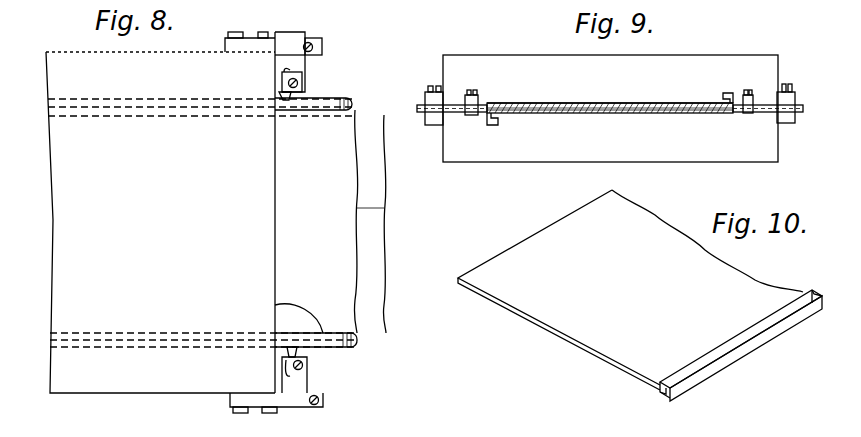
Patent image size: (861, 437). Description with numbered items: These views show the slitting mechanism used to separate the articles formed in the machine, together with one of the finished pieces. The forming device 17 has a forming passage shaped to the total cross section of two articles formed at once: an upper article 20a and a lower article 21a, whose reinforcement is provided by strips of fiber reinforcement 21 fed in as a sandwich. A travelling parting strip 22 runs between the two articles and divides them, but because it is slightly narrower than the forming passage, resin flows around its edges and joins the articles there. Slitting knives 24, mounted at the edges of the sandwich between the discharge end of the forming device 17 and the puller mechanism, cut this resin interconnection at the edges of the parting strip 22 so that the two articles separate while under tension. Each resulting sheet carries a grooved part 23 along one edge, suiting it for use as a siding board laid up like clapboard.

In FIG. 8, the forming device 17 is at (53, 241).
In FIG. 8, the upper article 20a is at (384, 208).
In FIG. 9, the upper article 20a is at (520, 103).
In FIG. 10, the upper article 20a is at (597, 347).
In FIG. 9, the fiber reinforcement strips 21 is at (741, 103).
In FIG. 9, the lower article 21a is at (660, 114).
In FIG. 8, the parting strip 22 is at (387, 245).
In FIG. 9, the parting strip 22 is at (555, 113).
In FIG. 8, the grooved part 23 is at (353, 101).
In FIG. 9, the grooved part 23 is at (494, 125).
In FIG. 10, the grooved part 23 is at (690, 372).
In FIG. 8, the slitting knives 24 is at (297, 91).
In FIG. 9, the slitting knives 24 is at (482, 115).